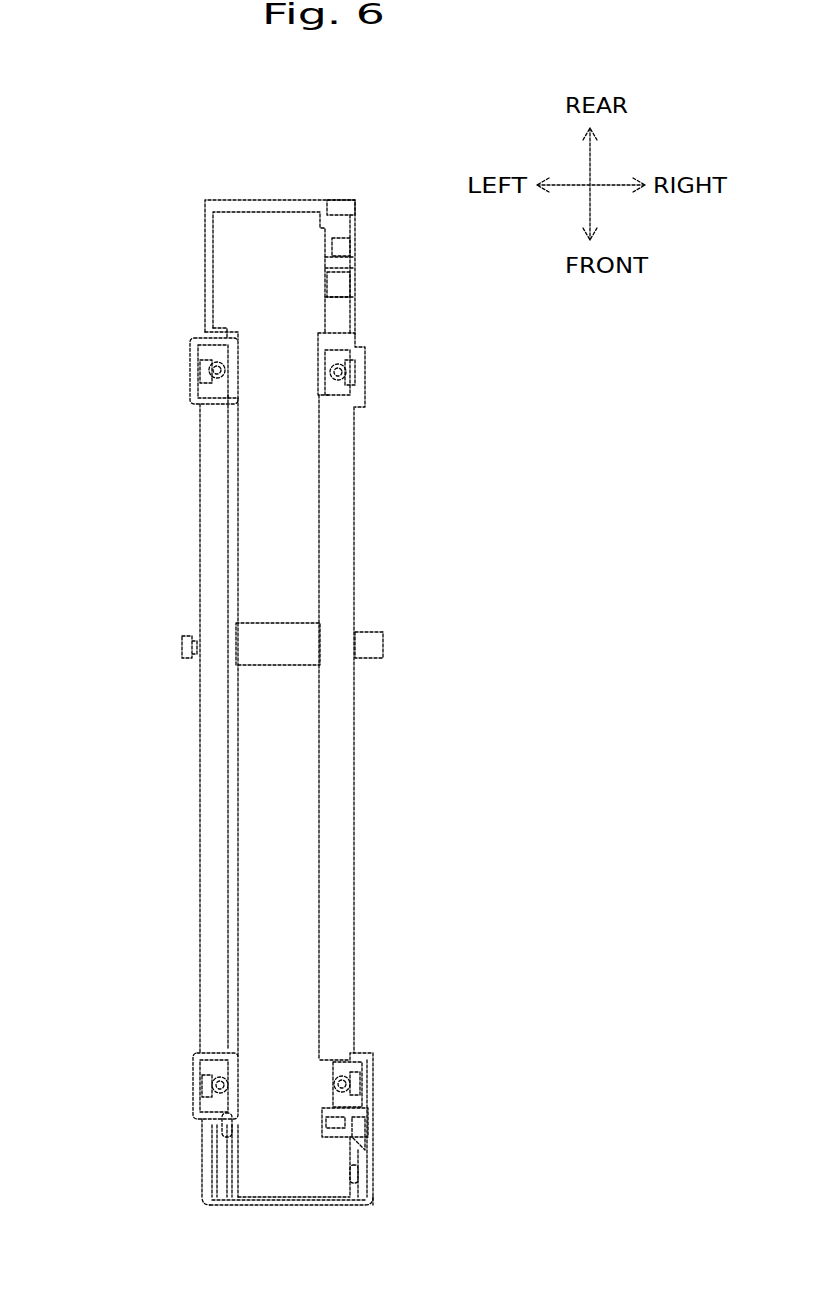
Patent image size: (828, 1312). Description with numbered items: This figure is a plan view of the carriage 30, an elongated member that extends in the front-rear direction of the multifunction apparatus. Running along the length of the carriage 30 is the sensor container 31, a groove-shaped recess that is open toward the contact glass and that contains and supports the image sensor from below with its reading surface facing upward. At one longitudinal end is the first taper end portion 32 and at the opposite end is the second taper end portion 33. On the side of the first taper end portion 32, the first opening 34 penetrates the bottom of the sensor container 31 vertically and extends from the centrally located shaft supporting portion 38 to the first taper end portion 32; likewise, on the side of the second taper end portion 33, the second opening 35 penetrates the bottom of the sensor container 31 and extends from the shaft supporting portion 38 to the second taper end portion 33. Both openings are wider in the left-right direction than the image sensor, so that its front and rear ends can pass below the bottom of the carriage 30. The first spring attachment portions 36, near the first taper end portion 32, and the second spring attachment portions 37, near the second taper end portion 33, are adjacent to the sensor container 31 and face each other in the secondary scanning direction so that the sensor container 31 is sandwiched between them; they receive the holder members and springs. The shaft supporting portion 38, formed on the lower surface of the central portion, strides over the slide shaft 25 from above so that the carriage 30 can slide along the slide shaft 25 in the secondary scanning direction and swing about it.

The slide shaft 25 is at (363, 645).
The carriage 30 is at (338, 210).
The sensor container 31 is at (287, 513).
The first taper end portion 32 is at (374, 1187).
The second taper end portion 33 is at (203, 207).
The first opening 34 is at (272, 1162).
The second opening 35 is at (280, 232).
The first spring attachment portions 36 is at (208, 1065).
The second spring attachment portions 37 is at (220, 388).
The shaft supporting portion 38 is at (268, 635).